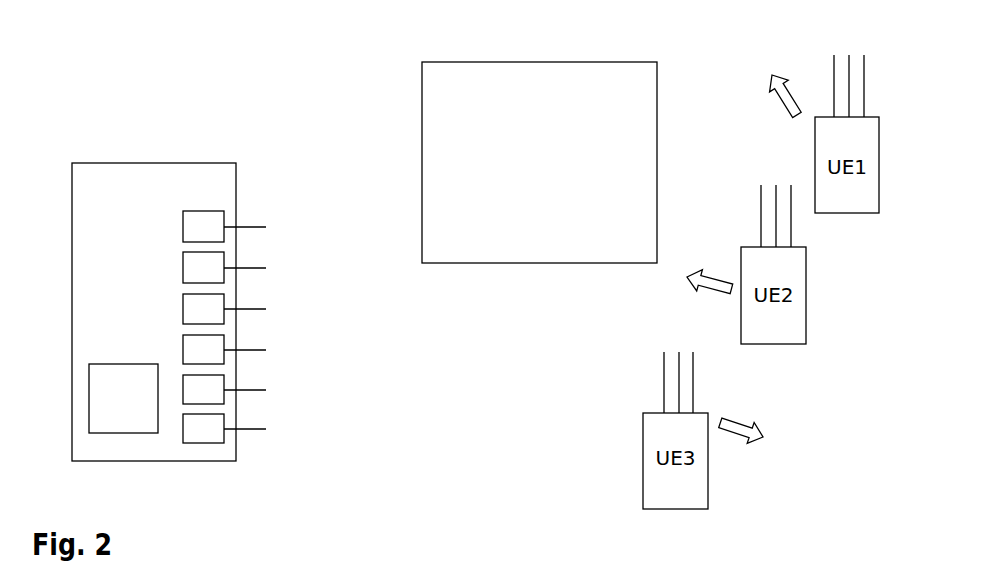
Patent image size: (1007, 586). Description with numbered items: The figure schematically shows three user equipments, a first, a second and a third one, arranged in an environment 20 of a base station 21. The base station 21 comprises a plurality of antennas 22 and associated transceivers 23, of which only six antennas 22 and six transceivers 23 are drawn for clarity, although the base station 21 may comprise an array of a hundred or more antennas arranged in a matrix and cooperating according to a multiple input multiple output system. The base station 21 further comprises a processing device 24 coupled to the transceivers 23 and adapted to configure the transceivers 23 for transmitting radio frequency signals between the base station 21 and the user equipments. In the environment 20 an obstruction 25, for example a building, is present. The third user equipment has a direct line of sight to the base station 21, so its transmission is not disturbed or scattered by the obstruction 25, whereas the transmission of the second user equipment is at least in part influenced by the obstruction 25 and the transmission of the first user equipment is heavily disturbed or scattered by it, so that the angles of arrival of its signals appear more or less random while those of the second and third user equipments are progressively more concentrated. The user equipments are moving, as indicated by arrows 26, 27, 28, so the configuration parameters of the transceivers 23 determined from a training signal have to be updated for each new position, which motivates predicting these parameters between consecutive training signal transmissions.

The environment 20 is at (244, 106).
The base station 21 is at (140, 162).
The antennas 22 is at (250, 225).
The transceivers 23 is at (218, 212).
The processing device 24 is at (140, 433).
The obstruction 25 is at (655, 97).
The arrow 26 is at (782, 102).
The arrow 27 is at (710, 262).
The arrow 28 is at (738, 418).